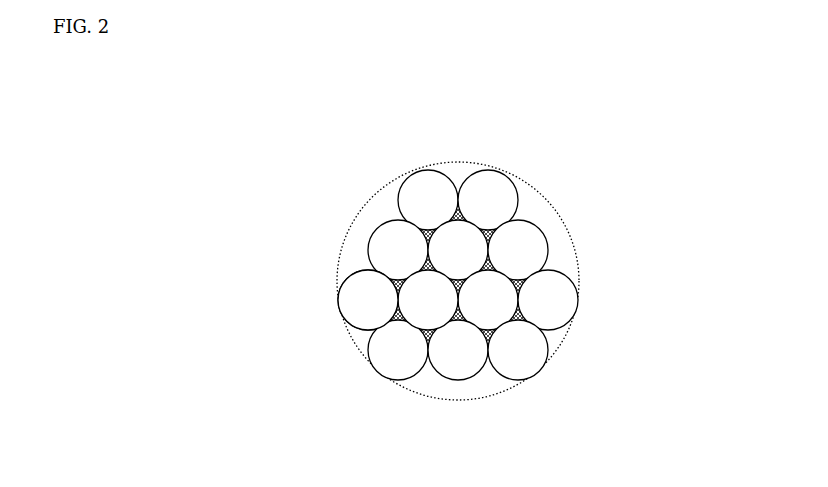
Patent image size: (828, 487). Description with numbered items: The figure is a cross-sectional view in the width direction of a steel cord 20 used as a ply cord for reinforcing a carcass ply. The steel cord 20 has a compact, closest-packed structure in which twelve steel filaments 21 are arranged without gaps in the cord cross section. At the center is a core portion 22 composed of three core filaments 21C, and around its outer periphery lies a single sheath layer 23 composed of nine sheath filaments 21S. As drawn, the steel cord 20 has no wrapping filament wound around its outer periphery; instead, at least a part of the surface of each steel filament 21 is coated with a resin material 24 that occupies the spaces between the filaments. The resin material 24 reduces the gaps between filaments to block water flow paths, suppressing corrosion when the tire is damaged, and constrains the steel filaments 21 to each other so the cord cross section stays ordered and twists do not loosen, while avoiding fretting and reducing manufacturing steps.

The steel cord 20 is at (607, 165).
The steel filament 21 is at (567, 290).
The core filament 21C is at (425, 305).
The sheath filament 21S is at (356, 298).
The core portion 22 is at (515, 275).
The sheath layer 23 is at (373, 228).
The resin material 24 is at (483, 228).